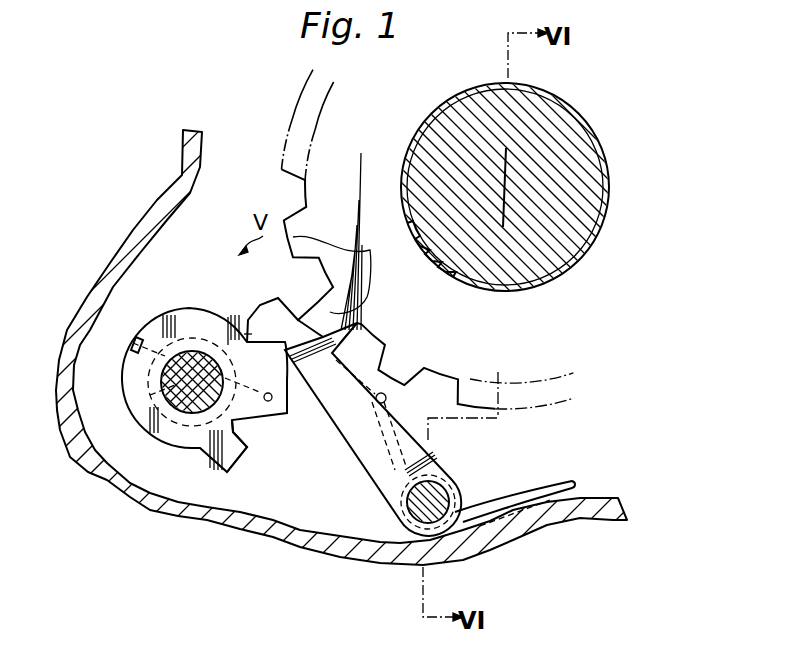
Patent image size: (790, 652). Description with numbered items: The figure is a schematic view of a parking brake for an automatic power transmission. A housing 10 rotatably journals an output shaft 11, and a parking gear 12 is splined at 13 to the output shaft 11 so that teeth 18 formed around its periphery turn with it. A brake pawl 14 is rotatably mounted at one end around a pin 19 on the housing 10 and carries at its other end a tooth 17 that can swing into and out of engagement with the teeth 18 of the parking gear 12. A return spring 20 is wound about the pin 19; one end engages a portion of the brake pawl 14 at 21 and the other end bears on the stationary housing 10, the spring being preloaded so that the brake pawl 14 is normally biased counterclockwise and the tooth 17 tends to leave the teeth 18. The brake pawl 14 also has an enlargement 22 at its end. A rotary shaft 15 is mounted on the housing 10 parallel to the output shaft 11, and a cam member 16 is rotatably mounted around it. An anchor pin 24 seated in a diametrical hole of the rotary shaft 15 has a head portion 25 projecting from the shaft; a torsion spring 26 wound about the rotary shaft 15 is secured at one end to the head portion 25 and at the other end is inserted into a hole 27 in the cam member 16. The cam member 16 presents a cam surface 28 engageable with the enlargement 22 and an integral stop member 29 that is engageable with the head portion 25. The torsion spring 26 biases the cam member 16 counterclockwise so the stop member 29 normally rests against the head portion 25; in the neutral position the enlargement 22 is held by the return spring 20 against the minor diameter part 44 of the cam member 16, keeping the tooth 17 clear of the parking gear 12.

The housing 10 is at (266, 548).
The output shaft 11 is at (586, 247).
The parking gear 12 is at (516, 375).
The spline 13 is at (428, 256).
The brake pawl 14 is at (360, 452).
The rotary shaft 15 is at (197, 418).
The cam member 16 is at (138, 378).
The tooth 17 is at (333, 351).
The teeth 18 is at (340, 241).
The pin 19 is at (440, 515).
The return spring 20 is at (541, 500).
The engagement portion 21 is at (387, 400).
The enlargement 22 is at (263, 312).
The anchor pin 24 is at (131, 351).
The head portion 25 is at (252, 428).
The torsion spring 26 is at (162, 398).
The hole 27 is at (270, 402).
The cam surface 28 is at (236, 330).
The stop member 29 is at (233, 450).
The minor diameter part 44 is at (229, 328).